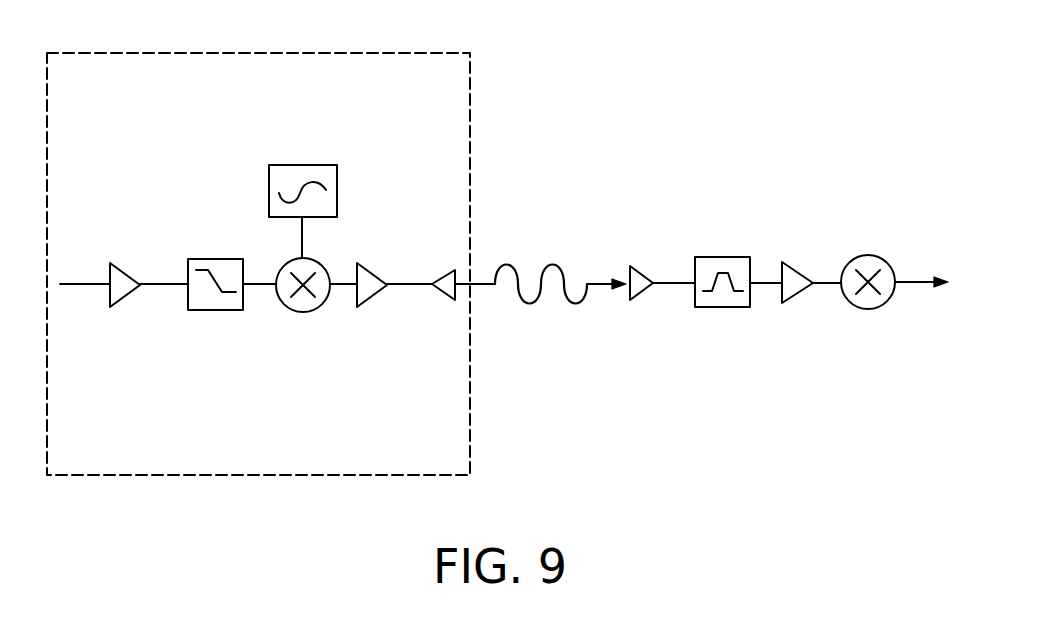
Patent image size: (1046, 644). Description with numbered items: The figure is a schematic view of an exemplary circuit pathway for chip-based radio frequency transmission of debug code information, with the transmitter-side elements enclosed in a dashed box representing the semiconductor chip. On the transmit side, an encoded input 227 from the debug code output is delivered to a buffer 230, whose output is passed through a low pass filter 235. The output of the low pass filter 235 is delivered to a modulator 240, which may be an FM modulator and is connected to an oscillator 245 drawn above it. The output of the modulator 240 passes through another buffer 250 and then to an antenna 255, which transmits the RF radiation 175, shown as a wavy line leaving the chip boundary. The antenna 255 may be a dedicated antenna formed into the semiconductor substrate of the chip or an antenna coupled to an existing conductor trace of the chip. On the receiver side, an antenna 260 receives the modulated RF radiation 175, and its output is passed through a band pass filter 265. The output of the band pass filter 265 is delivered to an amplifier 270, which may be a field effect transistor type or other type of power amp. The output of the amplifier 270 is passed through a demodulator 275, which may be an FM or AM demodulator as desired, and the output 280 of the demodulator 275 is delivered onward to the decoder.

The encoded input 227 is at (80, 280).
The buffer 230 is at (125, 273).
The low pass filter 235 is at (225, 270).
The modulator 240 is at (302, 306).
The oscillator 245 is at (292, 175).
The buffer 250 is at (366, 272).
The antenna 255 is at (447, 276).
The RF radiation 175 is at (552, 268).
The antenna 260 is at (637, 270).
The band pass filter 265 is at (714, 266).
The amplifier 270 is at (793, 268).
The demodulator 275 is at (866, 266).
The output 280 is at (920, 278).